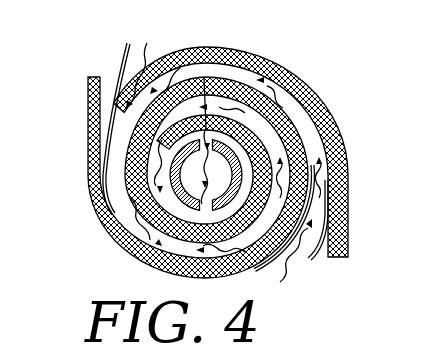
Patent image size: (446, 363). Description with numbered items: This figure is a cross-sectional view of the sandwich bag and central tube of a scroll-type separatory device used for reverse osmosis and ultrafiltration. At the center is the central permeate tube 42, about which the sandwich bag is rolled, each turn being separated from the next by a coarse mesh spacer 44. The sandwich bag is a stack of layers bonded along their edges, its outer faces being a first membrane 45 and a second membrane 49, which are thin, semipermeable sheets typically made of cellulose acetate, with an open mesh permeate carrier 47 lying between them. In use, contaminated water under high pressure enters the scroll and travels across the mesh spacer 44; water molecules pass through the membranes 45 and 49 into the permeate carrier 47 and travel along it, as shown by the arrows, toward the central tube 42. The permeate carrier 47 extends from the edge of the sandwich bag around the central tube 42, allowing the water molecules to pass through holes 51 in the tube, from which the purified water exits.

The central permeate tube 42 is at (212, 142).
The coarse mesh spacer 44 is at (93, 189).
The first membrane 45 is at (187, 110).
The open mesh permeate carrier 47 is at (168, 247).
The second membrane 49 is at (204, 78).
The holes 51 is at (180, 268).